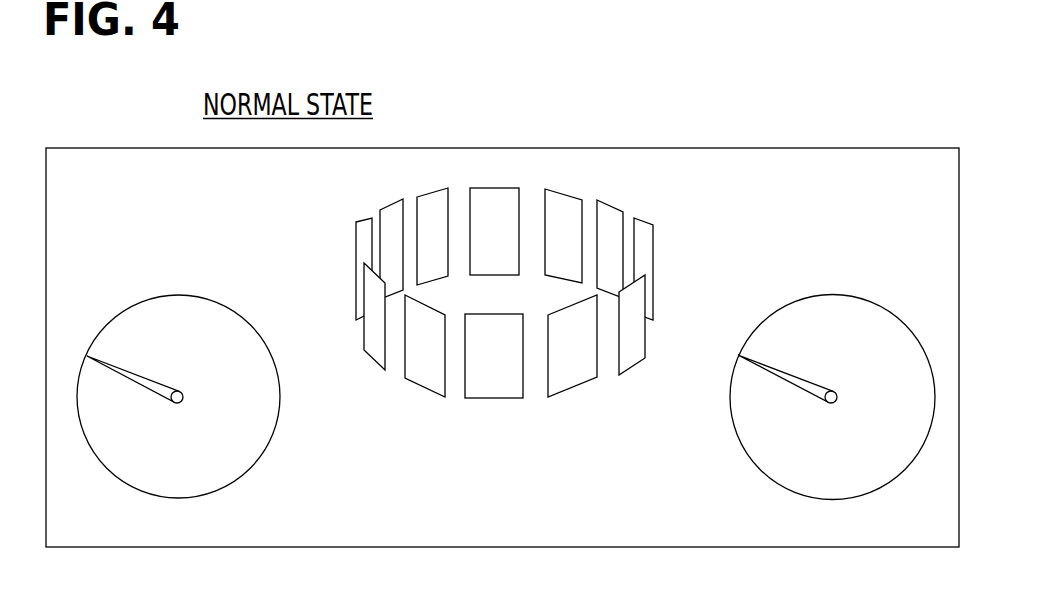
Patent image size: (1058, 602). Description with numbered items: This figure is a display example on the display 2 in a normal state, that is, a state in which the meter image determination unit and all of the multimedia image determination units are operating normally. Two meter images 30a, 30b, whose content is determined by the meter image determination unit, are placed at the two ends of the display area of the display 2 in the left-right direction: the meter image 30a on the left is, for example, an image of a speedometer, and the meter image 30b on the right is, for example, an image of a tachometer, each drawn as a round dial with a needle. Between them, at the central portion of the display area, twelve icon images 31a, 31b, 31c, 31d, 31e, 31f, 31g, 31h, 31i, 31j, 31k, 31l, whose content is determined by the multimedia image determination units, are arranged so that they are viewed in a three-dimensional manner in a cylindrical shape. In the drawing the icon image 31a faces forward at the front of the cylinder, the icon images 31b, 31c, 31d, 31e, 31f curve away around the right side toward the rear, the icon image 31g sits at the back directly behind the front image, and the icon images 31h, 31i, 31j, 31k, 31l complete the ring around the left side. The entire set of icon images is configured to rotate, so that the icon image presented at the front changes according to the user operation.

The display 2 is at (900, 148).
The meter image 30a is at (173, 295).
The meter image 30b is at (831, 296).
The icon image 31a is at (494, 398).
The icon image 31b is at (573, 387).
The icon image 31c is at (630, 360).
The icon image 31d is at (653, 247).
The icon image 31e is at (612, 206).
The icon image 31f is at (560, 193).
The icon image 31g is at (476, 187).
The icon image 31h is at (430, 193).
The icon image 31i is at (380, 206).
The icon image 31j is at (356, 249).
The icon image 31k is at (373, 360).
The icon image 31l is at (430, 392).